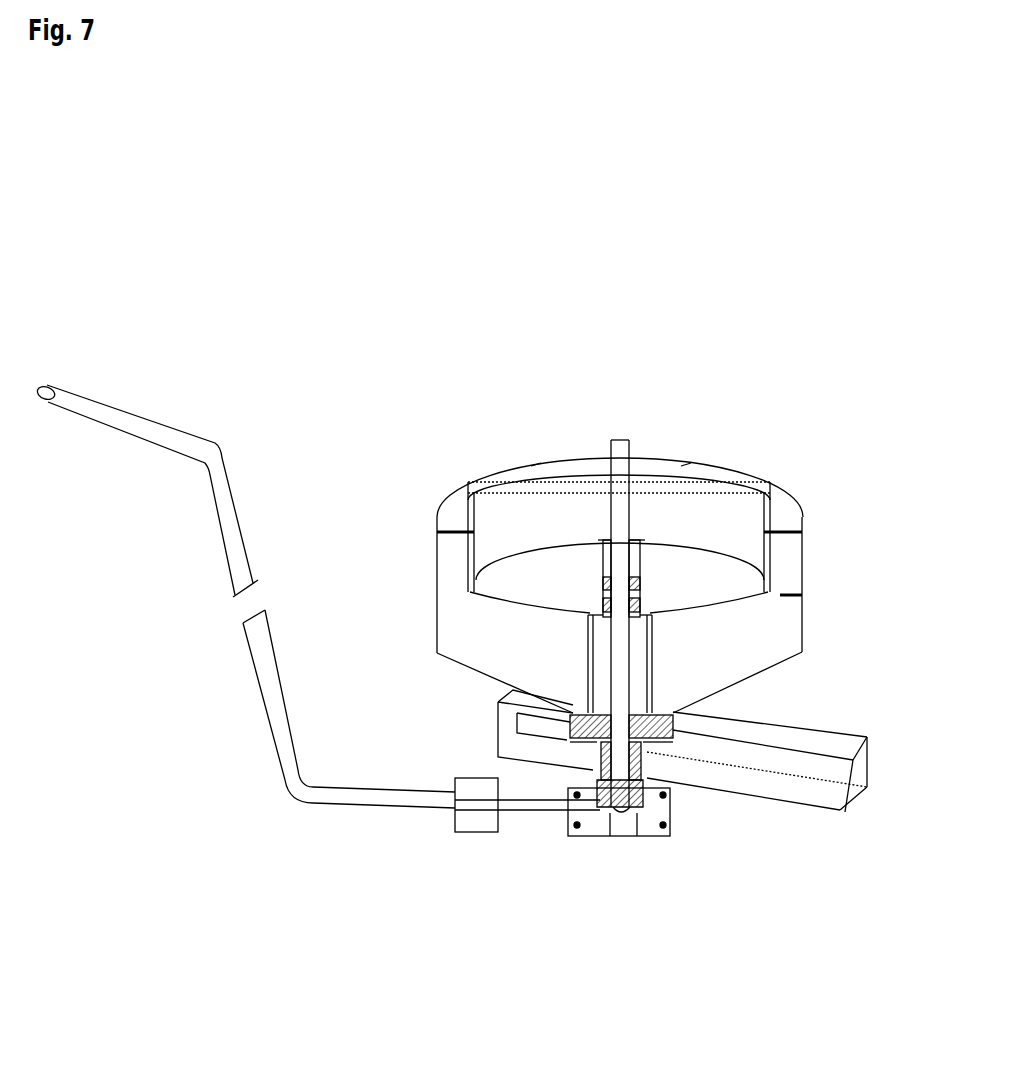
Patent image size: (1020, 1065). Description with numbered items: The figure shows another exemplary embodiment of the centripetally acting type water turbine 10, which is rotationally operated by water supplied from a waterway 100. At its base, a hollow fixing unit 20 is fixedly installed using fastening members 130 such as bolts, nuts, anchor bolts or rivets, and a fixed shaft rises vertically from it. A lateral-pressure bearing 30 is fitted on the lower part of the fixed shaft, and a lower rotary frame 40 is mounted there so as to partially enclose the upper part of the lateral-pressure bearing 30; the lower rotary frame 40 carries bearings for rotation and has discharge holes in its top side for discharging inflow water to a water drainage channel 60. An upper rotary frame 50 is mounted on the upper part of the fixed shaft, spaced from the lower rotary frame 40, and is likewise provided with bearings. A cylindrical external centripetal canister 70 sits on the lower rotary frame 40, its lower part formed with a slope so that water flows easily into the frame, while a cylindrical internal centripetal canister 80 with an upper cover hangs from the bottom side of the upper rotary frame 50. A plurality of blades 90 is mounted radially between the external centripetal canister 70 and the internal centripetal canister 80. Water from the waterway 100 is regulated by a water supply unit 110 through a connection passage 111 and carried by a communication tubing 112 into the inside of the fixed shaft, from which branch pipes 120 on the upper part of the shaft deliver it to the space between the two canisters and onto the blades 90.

The water turbine 10 is at (385, 264).
The fixing unit 20 is at (638, 836).
The lateral-pressure bearing 30 is at (620, 836).
The lower rotary frame 40 is at (653, 768).
The upper rotary frame 50 is at (805, 595).
The water drainage channel 60 is at (836, 785).
The external centripetal canister 70 is at (810, 545).
The internal centripetal canister 80 is at (450, 557).
The blades 90 is at (457, 610).
The waterway 100 is at (305, 800).
The water supply unit 110 is at (573, 945).
The connection passage 111 is at (473, 833).
The communication tubing 112 is at (528, 813).
The branch pipes 120 is at (537, 467).
The fastening members 130 is at (667, 787).